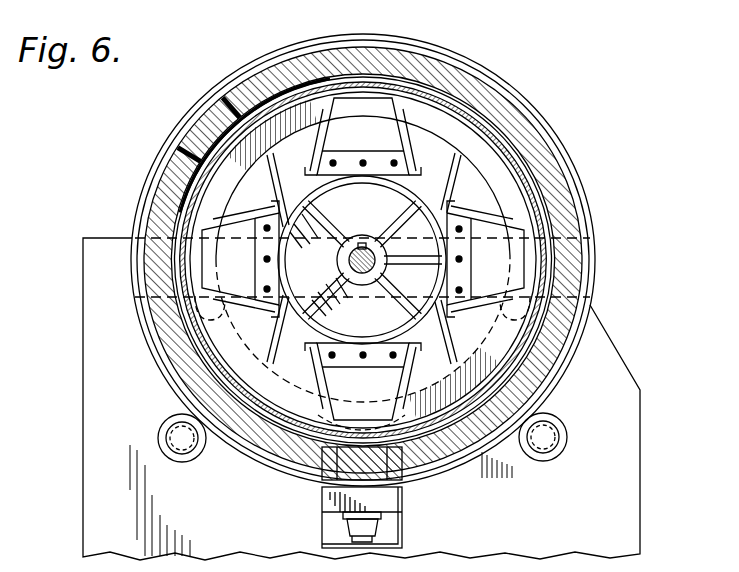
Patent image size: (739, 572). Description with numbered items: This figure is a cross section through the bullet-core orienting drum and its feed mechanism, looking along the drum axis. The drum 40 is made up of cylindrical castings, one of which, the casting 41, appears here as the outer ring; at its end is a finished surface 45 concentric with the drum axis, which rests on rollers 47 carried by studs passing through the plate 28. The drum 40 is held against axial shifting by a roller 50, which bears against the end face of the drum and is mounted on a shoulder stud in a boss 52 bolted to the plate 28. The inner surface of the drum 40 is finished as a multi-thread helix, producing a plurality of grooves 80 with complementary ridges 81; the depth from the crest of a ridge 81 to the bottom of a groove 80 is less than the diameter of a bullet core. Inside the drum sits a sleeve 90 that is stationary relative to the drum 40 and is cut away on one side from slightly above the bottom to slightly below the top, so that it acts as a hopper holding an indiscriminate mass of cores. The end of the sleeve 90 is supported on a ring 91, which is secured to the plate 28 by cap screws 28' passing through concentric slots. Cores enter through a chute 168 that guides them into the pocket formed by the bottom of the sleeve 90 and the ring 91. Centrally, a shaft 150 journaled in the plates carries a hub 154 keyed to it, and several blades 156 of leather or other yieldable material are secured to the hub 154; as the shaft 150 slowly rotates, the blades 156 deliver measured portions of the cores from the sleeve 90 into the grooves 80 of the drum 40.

The plate 28 is at (335, 399).
The cap screws 28' is at (370, 336).
The drum 40 is at (398, 55).
The cylindrical casting 41 is at (575, 196).
The finished surface 45 is at (482, 73).
The rollers 47 is at (158, 428).
The roller 50 is at (407, 480).
The boss 52 is at (403, 502).
The grooves 80 is at (180, 153).
The ridges 81 is at (242, 113).
The sleeve 90 is at (214, 142).
The ring 91 is at (223, 184).
The shaft 150 is at (375, 263).
The hub 154 is at (343, 266).
The blades 156 is at (392, 118).
The chute 168 is at (460, 156).